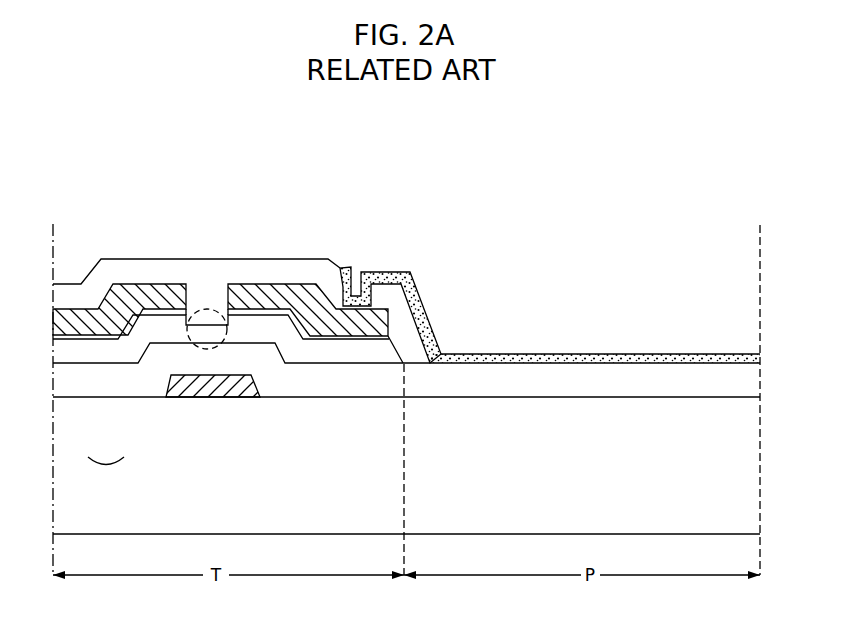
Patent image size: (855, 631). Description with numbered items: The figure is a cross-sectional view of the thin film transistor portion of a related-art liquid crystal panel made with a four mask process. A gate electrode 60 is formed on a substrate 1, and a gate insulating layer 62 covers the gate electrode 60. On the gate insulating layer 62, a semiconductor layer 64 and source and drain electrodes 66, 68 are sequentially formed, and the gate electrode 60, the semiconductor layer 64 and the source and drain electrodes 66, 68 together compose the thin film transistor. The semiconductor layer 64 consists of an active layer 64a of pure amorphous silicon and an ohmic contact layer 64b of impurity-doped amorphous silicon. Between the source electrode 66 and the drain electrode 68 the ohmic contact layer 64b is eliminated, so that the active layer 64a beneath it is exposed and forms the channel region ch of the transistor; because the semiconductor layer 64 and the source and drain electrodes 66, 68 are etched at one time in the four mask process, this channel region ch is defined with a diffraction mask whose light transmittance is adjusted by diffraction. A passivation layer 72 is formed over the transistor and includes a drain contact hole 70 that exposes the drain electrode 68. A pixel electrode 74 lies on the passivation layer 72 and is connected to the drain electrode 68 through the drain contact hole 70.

The substrate 1 is at (372, 493).
The gate electrode 60 is at (215, 385).
The gate insulating layer 62 is at (335, 378).
The semiconductor layer 64 is at (106, 472).
The active layer 64a is at (78, 355).
The ohmic contact layer 64b is at (112, 338).
The source electrode 66 is at (143, 293).
The drain electrode 68 is at (273, 290).
The channel region ch is at (204, 310).
The drain contact hole 70 is at (352, 258).
The passivation layer 72 is at (72, 290).
The pixel electrode 74 is at (580, 350).